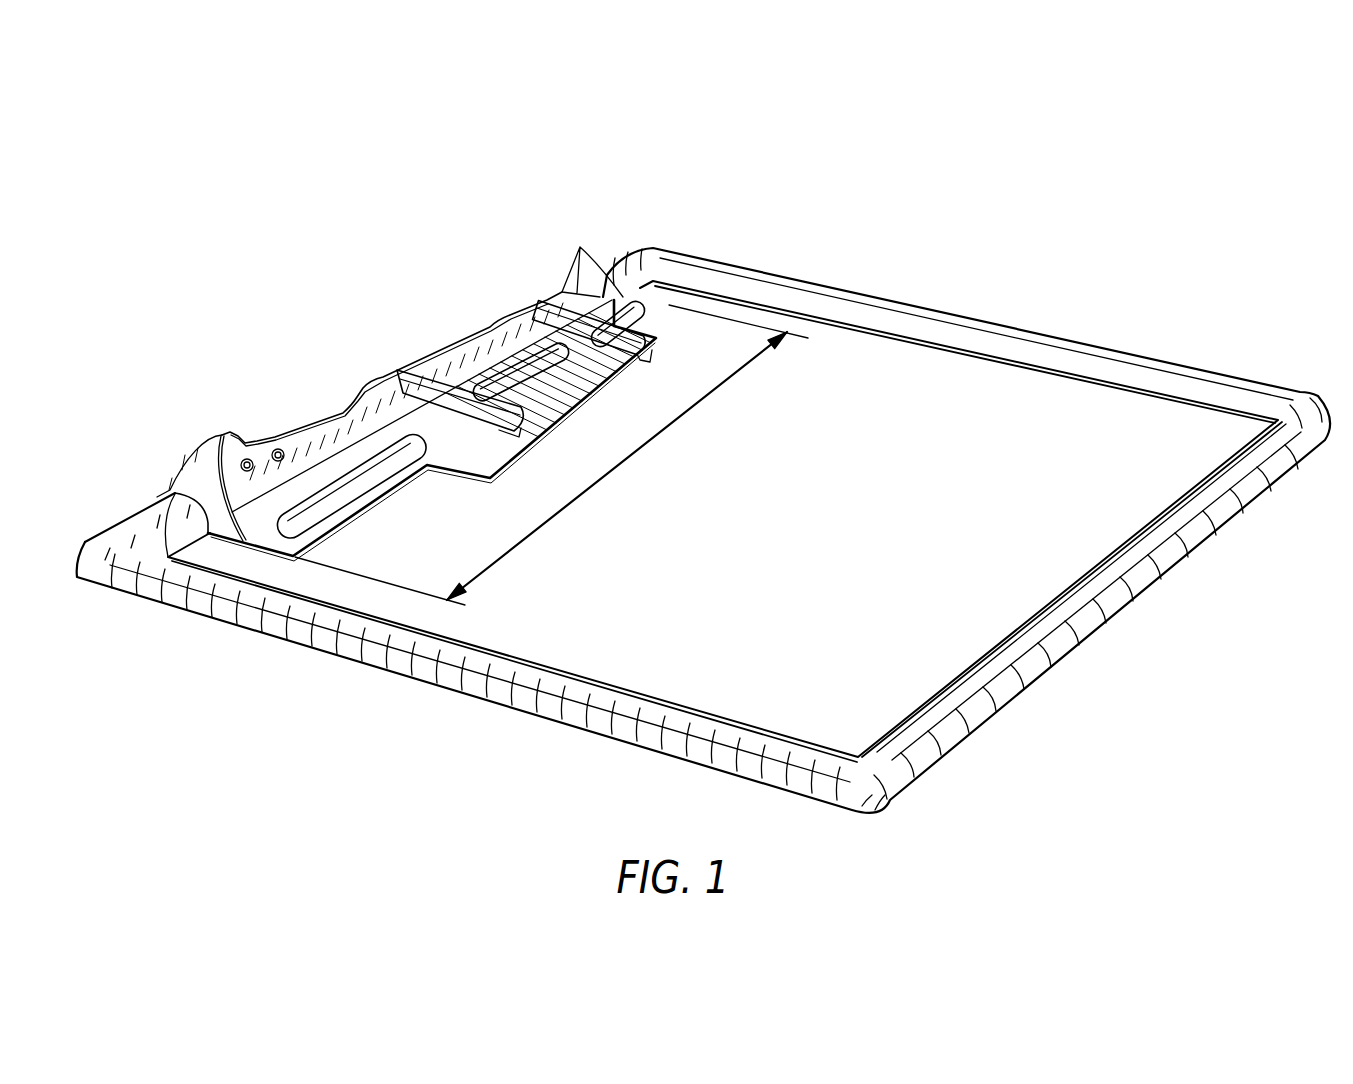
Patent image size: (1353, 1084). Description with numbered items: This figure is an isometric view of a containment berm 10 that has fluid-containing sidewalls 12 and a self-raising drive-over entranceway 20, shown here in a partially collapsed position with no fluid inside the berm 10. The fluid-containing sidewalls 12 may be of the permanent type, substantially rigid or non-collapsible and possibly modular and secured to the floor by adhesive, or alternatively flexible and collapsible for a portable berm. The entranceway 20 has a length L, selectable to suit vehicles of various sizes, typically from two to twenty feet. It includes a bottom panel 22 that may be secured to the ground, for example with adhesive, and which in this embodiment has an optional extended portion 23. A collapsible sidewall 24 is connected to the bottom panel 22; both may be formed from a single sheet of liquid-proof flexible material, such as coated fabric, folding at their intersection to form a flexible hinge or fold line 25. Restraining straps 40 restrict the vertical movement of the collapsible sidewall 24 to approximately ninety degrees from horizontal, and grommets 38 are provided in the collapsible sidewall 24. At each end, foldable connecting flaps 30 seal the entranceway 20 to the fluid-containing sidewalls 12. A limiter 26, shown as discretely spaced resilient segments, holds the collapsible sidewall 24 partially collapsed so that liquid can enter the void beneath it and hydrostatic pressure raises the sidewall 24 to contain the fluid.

The containment berm 10 is at (829, 229).
The fluid-containing sidewall 12 is at (920, 327).
The self-raising drive-over entranceway 20 is at (491, 327).
The bottom panel 22 is at (327, 520).
The extended portion 23 is at (575, 395).
The collapsible sidewall 24 is at (362, 413).
The fold line 25 is at (313, 463).
The limiter 26 is at (360, 483).
The foldable connecting flap 30 is at (207, 470).
The grommet 38 is at (277, 448).
The restraining strap 40 is at (440, 373).